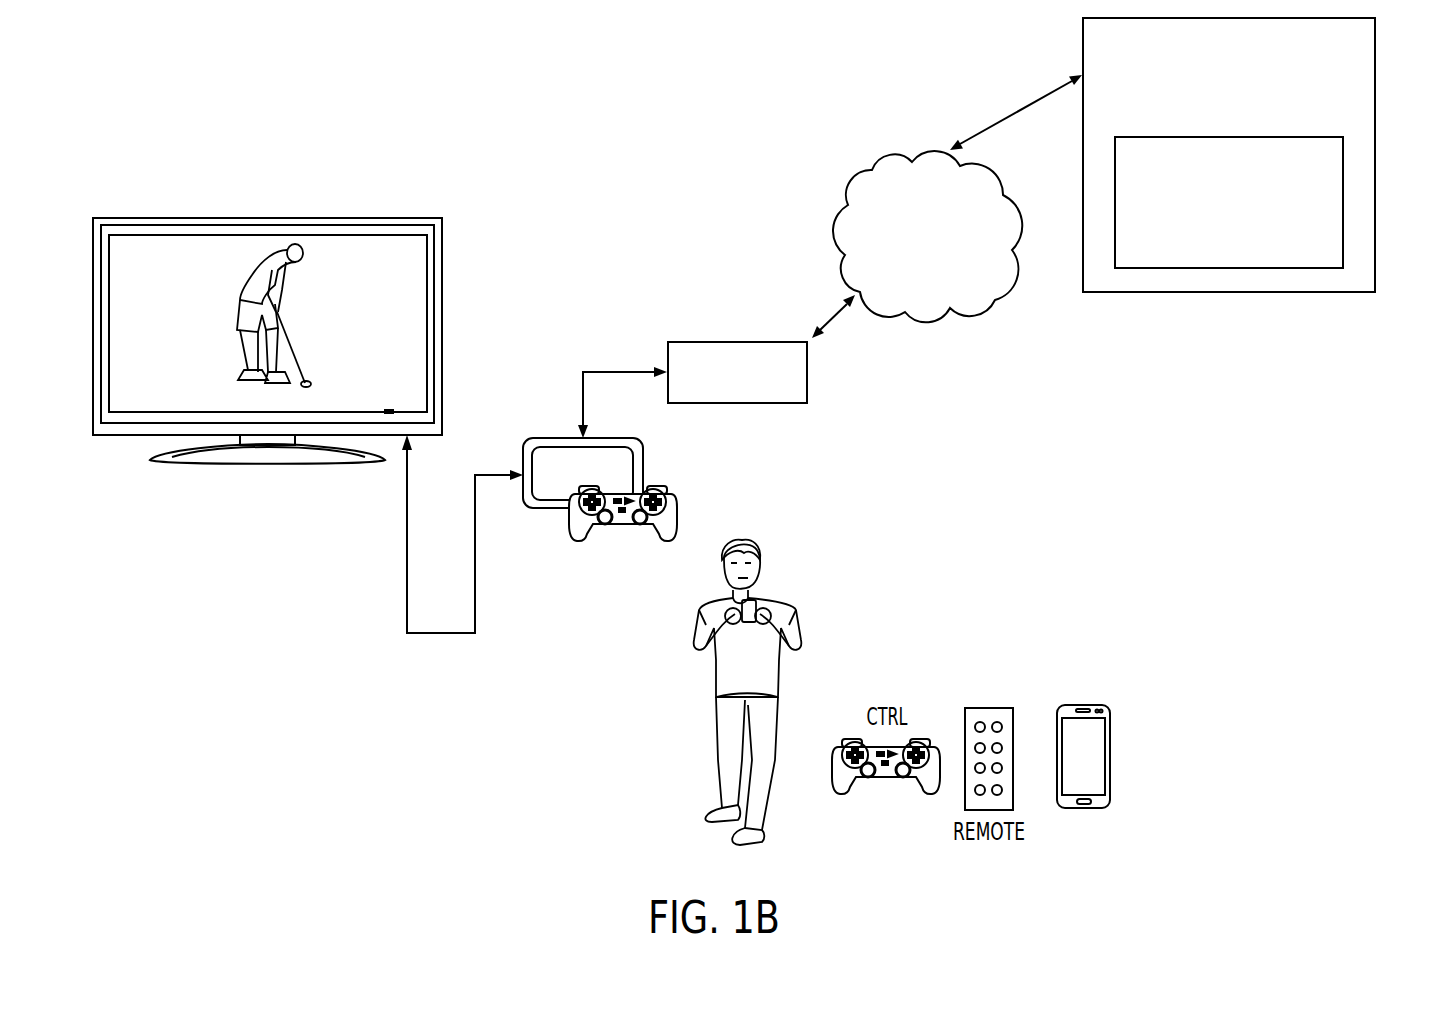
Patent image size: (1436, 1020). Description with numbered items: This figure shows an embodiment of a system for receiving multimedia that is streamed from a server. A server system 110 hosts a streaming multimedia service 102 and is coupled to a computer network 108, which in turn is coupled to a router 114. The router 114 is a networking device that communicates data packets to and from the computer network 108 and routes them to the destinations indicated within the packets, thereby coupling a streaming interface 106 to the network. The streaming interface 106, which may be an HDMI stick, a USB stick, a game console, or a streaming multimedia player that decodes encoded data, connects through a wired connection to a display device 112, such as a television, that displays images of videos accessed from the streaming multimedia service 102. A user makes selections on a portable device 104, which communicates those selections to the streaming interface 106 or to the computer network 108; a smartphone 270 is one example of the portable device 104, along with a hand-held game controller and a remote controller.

The streaming multimedia service 102 is at (1222, 268).
The portable device 104 is at (757, 600).
The streaming interface 106 is at (558, 437).
The computer network 108 is at (955, 303).
The server system 110 is at (1256, 183).
The display device 112 is at (263, 217).
The router 114 is at (710, 342).
The smartphone 270 is at (1085, 703).